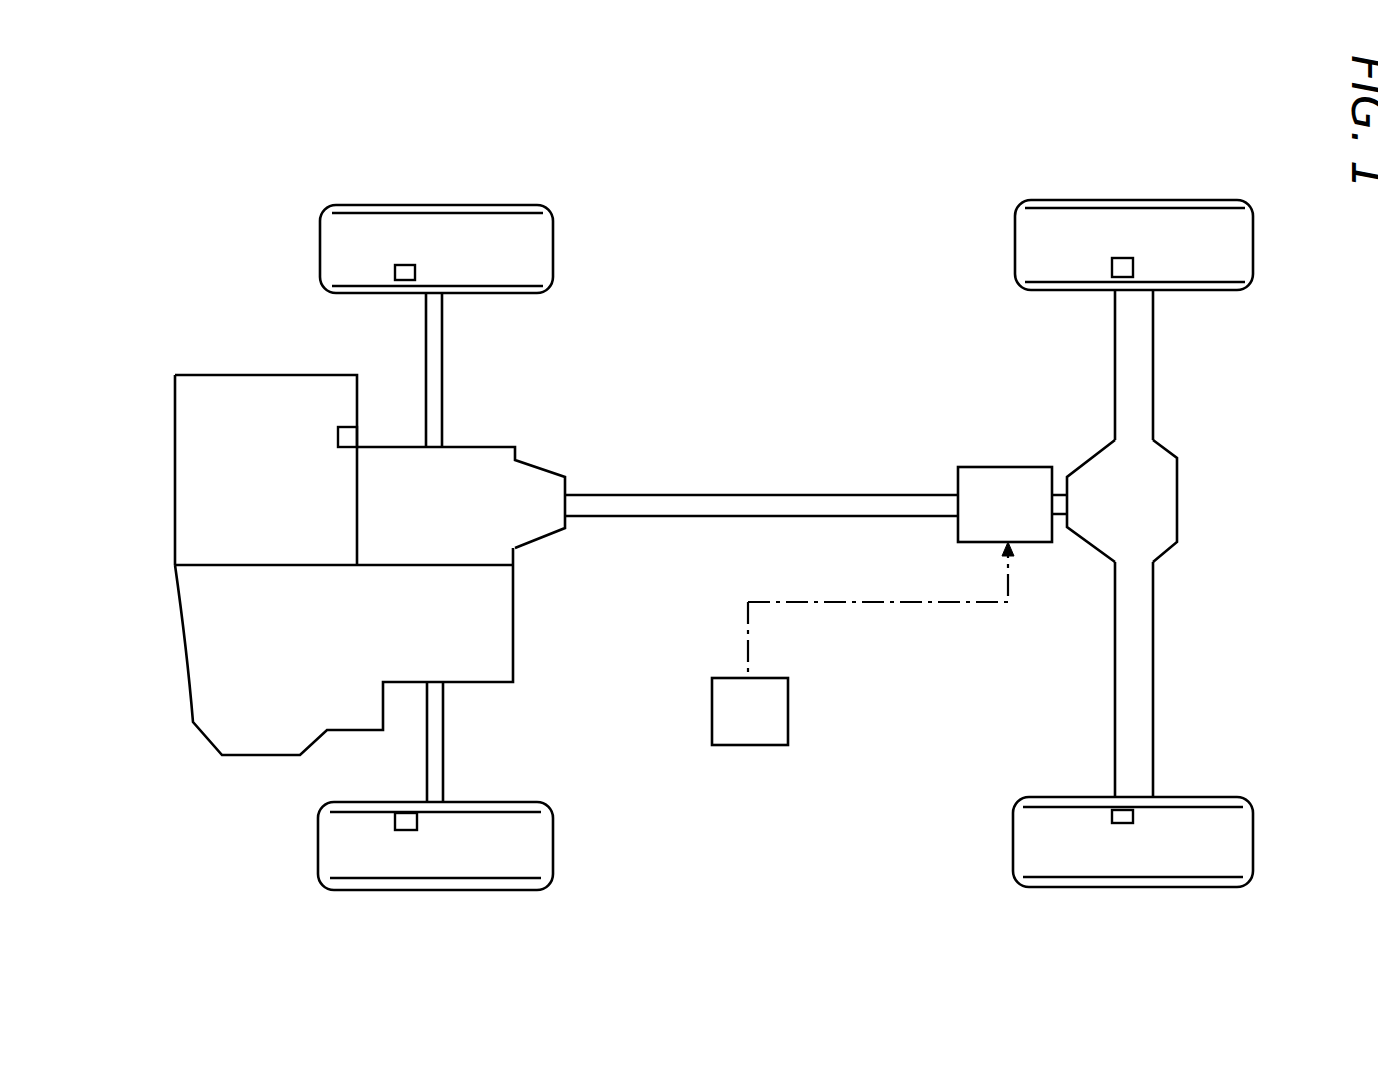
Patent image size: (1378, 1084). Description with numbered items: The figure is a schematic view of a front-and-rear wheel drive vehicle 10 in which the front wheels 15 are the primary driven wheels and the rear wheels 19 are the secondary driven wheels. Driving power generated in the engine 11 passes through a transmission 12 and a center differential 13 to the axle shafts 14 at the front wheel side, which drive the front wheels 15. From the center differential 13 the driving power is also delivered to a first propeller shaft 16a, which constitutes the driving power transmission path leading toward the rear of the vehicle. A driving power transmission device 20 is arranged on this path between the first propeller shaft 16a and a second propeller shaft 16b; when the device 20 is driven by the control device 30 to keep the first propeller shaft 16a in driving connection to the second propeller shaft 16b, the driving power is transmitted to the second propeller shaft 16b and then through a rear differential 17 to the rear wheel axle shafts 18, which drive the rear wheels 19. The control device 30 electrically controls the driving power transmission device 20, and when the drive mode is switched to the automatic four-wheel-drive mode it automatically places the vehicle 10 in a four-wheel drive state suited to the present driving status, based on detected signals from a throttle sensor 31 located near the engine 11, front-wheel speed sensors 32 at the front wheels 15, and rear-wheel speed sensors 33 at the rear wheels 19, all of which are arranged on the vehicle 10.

The front-and-rear wheel drive vehicle 10 is at (160, 374).
The engine 11 is at (248, 390).
The transmission 12 is at (197, 615).
The center differential 13 is at (538, 528).
The axle shafts 14 is at (443, 364).
The front wheels 15 is at (485, 223).
The first propeller shaft 16a is at (720, 502).
The second propeller shaft 16b is at (1070, 520).
The rear differential 17 is at (1140, 495).
The rear wheel axle shafts 18 is at (1140, 364).
The rear wheels 19 is at (1190, 217).
The driving power transmission device 20 is at (970, 466).
The control device 30 is at (752, 748).
The throttle sensor 31 is at (350, 427).
The front-wheel speed sensors 32 is at (400, 280).
The rear-wheel speed sensors 33 is at (1112, 272).